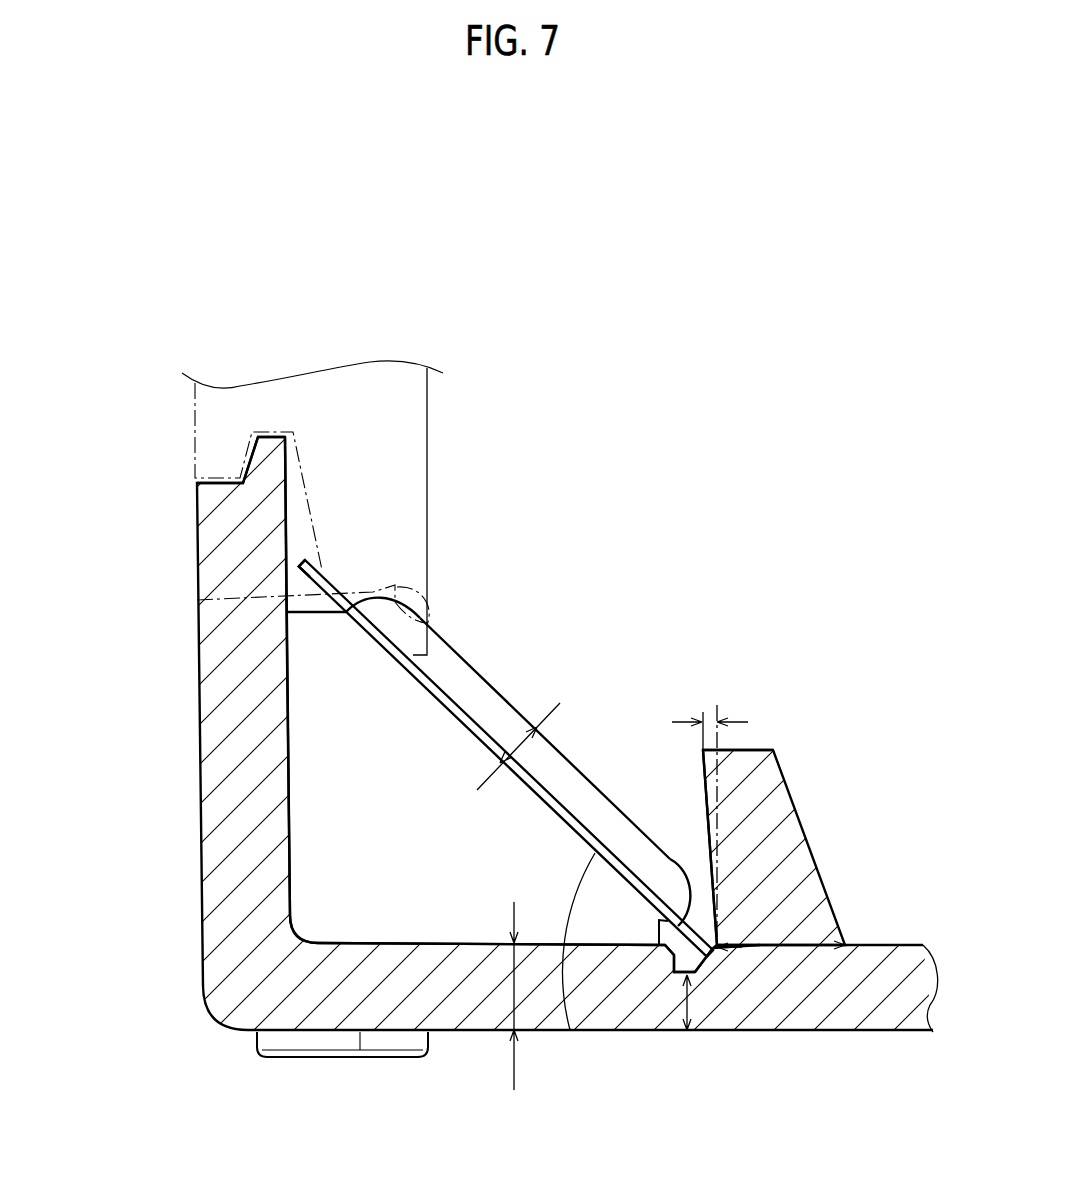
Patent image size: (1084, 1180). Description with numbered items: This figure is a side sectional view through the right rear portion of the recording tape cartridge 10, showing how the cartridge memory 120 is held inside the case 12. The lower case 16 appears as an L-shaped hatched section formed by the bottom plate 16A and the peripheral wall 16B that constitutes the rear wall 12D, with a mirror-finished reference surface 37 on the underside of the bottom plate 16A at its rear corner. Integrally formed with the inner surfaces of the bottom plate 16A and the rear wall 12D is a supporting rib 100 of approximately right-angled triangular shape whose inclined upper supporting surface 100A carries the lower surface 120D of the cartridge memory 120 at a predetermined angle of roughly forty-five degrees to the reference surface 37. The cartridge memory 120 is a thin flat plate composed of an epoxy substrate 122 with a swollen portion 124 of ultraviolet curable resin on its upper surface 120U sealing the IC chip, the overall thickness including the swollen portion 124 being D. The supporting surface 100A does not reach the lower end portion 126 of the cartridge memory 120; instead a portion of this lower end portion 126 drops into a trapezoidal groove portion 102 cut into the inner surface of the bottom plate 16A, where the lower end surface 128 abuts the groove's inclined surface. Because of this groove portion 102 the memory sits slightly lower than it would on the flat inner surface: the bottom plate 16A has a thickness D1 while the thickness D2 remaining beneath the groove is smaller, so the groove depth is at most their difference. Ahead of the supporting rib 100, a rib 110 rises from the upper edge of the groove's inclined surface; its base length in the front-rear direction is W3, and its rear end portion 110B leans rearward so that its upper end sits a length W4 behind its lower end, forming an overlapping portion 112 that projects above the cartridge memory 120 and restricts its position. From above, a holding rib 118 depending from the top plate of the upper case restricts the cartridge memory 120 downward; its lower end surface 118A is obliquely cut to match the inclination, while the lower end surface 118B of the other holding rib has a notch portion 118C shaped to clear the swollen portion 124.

The recording tape cartridge 10 is at (190, 1047).
The case 12 is at (542, 700).
The lower case 16 is at (190, 547).
The rear wall 12D is at (363, 867).
The peripheral wall 16B is at (292, 790).
The bottom plate 16A is at (353, 943).
The reference surface 37 is at (360, 1034).
The supporting rib 100 is at (312, 748).
The supporting surface 100A is at (512, 708).
The holding rib 118 is at (440, 457).
The lower end surface 118A is at (322, 650).
The lower end surface 118B is at (197, 600).
The notch portion 118C is at (428, 617).
The cartridge memory 120 is at (578, 747).
The upper surface 120U is at (317, 566).
The lower surface 120D is at (457, 721).
The epoxy substrate 122 is at (295, 565).
The swollen portion 124 is at (447, 663).
The rib 110 is at (792, 764).
The rear end portion 110B is at (706, 793).
The overlapping portion 112 is at (702, 752).
The lower end portion 126 is at (665, 975).
The groove portion 102 is at (690, 965).
The lower end surface 128 is at (712, 953).
The thickness D is at (512, 738).
The thickness D1 is at (491, 1017).
The thickness D2 is at (692, 1000).
The length W3 is at (790, 945).
The length W4 is at (710, 716).